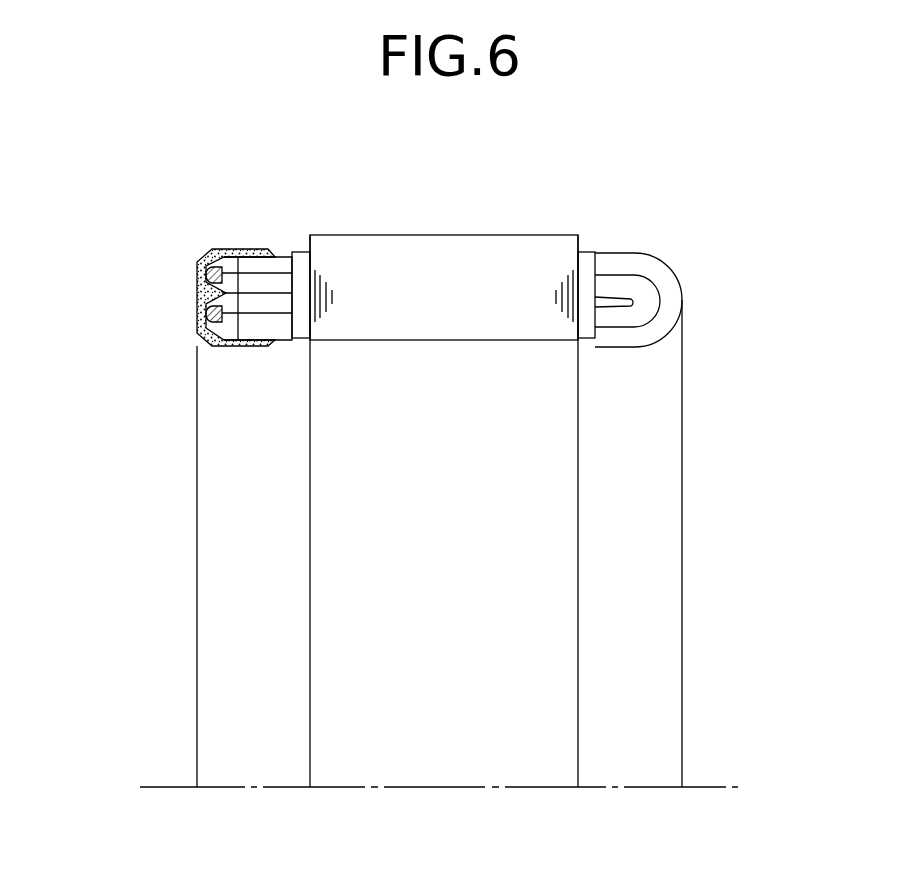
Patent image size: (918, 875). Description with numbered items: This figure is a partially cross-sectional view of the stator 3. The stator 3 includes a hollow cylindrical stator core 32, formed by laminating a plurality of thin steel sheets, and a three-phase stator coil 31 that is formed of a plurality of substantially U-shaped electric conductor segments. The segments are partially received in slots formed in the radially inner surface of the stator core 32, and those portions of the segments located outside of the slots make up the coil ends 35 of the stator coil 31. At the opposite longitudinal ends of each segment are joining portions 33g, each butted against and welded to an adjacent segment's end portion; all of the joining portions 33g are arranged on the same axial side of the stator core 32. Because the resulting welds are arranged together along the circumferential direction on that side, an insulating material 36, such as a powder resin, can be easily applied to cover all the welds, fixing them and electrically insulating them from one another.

The stator 3 is at (572, 228).
The stator coil 31 is at (282, 252).
The stator core 32 is at (466, 240).
The joining portion 33g is at (233, 260).
The coil ends 35 is at (199, 251).
The insulating material 36 is at (203, 297).